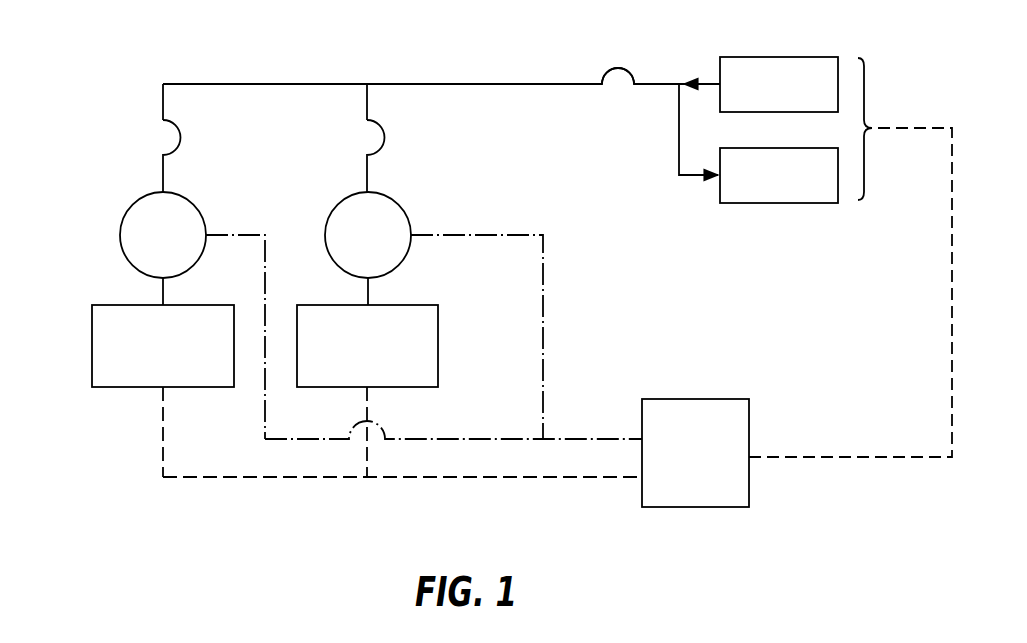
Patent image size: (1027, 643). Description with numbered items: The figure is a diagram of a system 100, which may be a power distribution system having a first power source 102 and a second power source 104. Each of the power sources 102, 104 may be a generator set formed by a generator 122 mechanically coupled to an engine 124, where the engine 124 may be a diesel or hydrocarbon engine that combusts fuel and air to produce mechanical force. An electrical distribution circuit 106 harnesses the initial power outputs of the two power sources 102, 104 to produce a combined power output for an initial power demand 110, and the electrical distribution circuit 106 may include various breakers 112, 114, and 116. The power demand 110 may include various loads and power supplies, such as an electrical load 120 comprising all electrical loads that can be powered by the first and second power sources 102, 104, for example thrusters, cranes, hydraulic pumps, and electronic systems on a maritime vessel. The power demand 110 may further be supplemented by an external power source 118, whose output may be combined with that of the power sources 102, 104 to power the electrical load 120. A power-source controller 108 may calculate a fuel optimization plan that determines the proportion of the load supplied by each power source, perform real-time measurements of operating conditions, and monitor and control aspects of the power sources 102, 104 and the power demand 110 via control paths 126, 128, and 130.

The system 100 is at (136, 68).
The first power source 102 is at (121, 404).
The second power source 104 is at (449, 357).
The electrical distribution circuit 106 is at (370, 78).
The power-source controller 108 is at (680, 467).
The power demand 110 is at (905, 128).
The breaker 112 is at (180, 138).
The breaker 114 is at (384, 138).
The breaker 116 is at (628, 72).
The external power source 118 is at (763, 98).
The electrical load 120 is at (763, 189).
The generator 122 is at (148, 248).
The engine 124 is at (147, 358).
The control path 126 is at (576, 477).
The control path 128 is at (576, 439).
The control path 130 is at (850, 457).